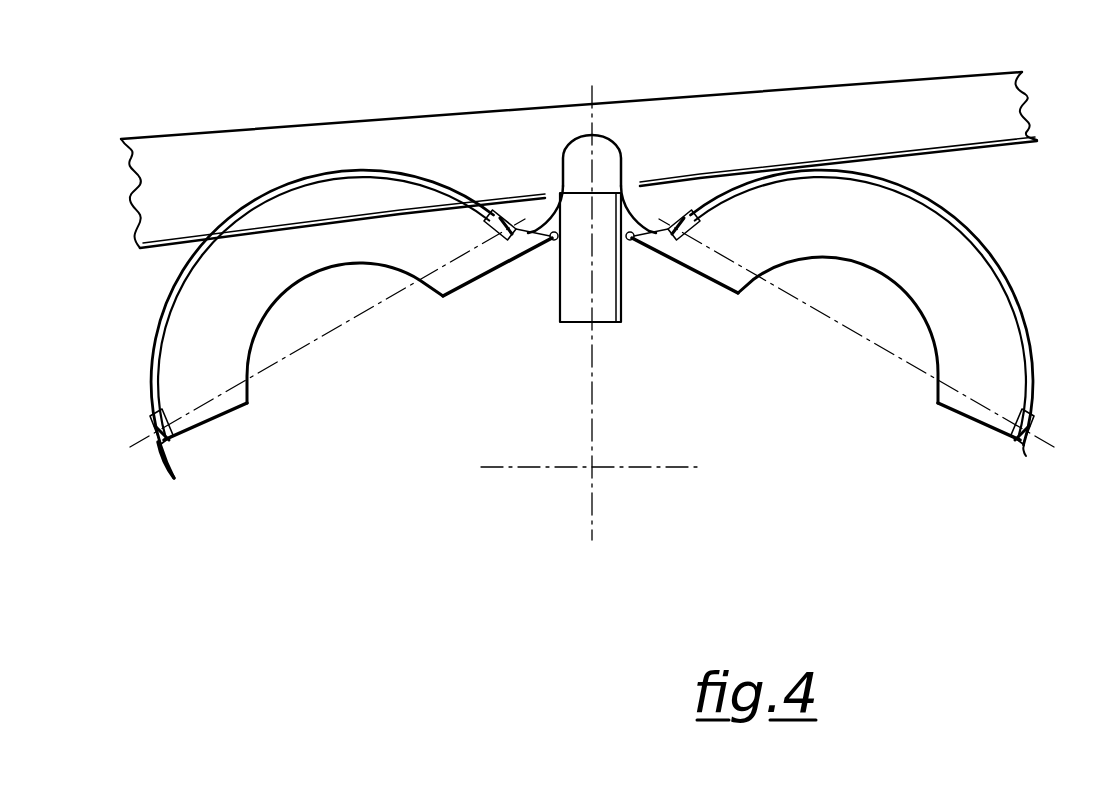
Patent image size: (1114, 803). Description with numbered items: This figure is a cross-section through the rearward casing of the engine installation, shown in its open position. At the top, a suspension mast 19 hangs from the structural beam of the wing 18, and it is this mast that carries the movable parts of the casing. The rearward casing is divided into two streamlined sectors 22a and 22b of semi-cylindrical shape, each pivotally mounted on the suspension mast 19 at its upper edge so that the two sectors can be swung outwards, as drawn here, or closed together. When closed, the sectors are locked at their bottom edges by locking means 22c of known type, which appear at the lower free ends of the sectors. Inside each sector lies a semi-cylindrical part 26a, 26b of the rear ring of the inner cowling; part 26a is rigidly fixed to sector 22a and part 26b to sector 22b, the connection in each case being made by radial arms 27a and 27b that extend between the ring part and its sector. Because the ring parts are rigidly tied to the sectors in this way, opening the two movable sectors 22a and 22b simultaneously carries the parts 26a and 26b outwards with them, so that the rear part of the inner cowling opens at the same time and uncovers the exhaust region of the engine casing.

The wing 18 is at (737, 118).
The suspension mast 19 is at (597, 212).
The streamlined sector 22a is at (350, 170).
The streamlined sector 22b is at (1006, 284).
The locking means 22c is at (157, 467).
The semi-cylindrical part 26a is at (250, 355).
The semi-cylindrical part 26b is at (850, 262).
The radial arm 27a is at (481, 282).
The radial arm 27b is at (202, 428).